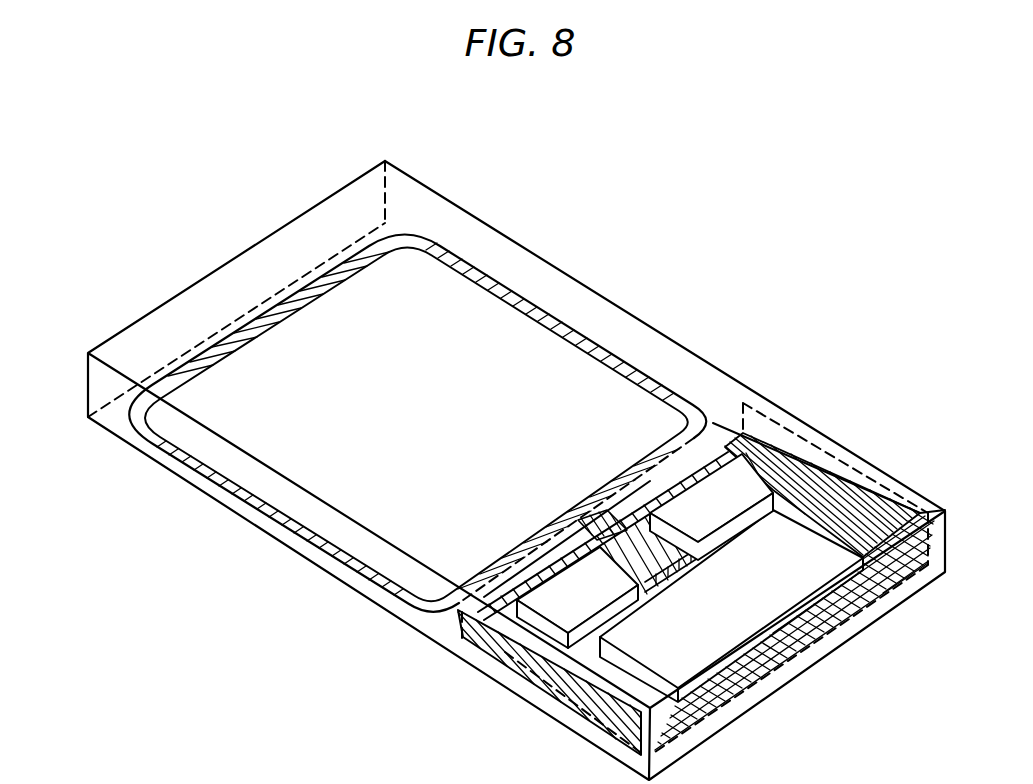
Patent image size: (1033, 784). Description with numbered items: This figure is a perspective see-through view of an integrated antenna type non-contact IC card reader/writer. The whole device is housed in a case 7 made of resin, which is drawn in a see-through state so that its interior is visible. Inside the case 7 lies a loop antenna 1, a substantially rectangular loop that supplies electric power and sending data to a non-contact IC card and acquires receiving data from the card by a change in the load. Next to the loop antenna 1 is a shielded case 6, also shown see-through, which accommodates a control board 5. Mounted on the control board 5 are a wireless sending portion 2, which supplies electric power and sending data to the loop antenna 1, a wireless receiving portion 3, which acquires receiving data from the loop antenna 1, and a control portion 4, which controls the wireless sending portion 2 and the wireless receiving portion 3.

The loop antenna 1 is at (498, 278).
The wireless sending portion 2 is at (553, 602).
The wireless receiving portion 3 is at (720, 477).
The control portion 4 is at (760, 600).
The control board 5 is at (572, 683).
The shielded case 6 is at (818, 443).
The case 7 is at (342, 207).